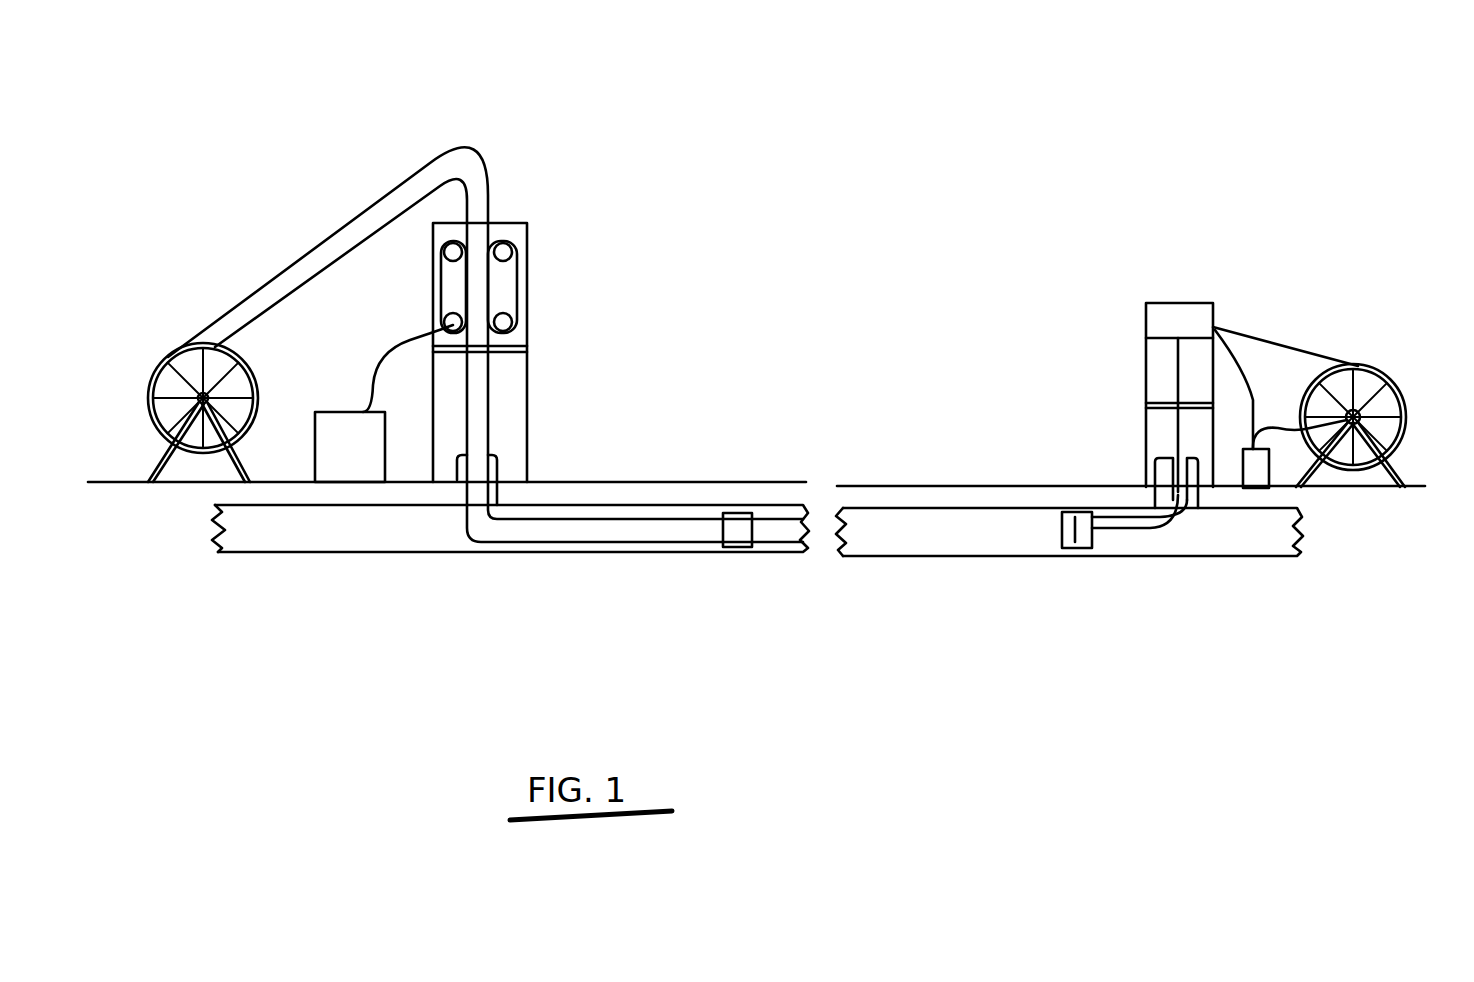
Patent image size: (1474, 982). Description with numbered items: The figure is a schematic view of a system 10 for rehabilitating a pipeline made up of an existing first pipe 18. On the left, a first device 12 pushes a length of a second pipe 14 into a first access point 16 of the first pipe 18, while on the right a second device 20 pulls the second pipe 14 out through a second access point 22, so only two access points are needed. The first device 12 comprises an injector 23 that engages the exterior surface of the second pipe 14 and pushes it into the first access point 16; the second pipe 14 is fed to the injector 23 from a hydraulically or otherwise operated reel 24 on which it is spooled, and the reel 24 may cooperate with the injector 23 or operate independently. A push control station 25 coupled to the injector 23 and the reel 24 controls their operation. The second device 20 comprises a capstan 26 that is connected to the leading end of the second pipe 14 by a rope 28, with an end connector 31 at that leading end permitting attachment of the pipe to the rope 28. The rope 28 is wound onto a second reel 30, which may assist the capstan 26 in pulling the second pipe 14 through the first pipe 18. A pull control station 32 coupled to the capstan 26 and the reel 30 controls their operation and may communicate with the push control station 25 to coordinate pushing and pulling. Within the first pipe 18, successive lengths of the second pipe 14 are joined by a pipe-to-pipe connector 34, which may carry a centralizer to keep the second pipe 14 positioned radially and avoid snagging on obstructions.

The system 10 is at (880, 107).
The first device 12 is at (537, 268).
The second pipe 14 is at (362, 226).
The first access point 16 is at (503, 494).
The first pipe 18 is at (1144, 551).
The second device 20 is at (1272, 312).
The second access point 22 is at (1147, 491).
The injector 23 is at (519, 292).
The reel 24 is at (148, 398).
The push control station 25 is at (333, 445).
The capstan 26 is at (1197, 303).
The rope 28 is at (1172, 514).
The reel 30 is at (1384, 367).
The end connector 31 is at (1087, 543).
The pull control station 32 is at (1268, 458).
The pipe-to-pipe connector 34 is at (717, 542).